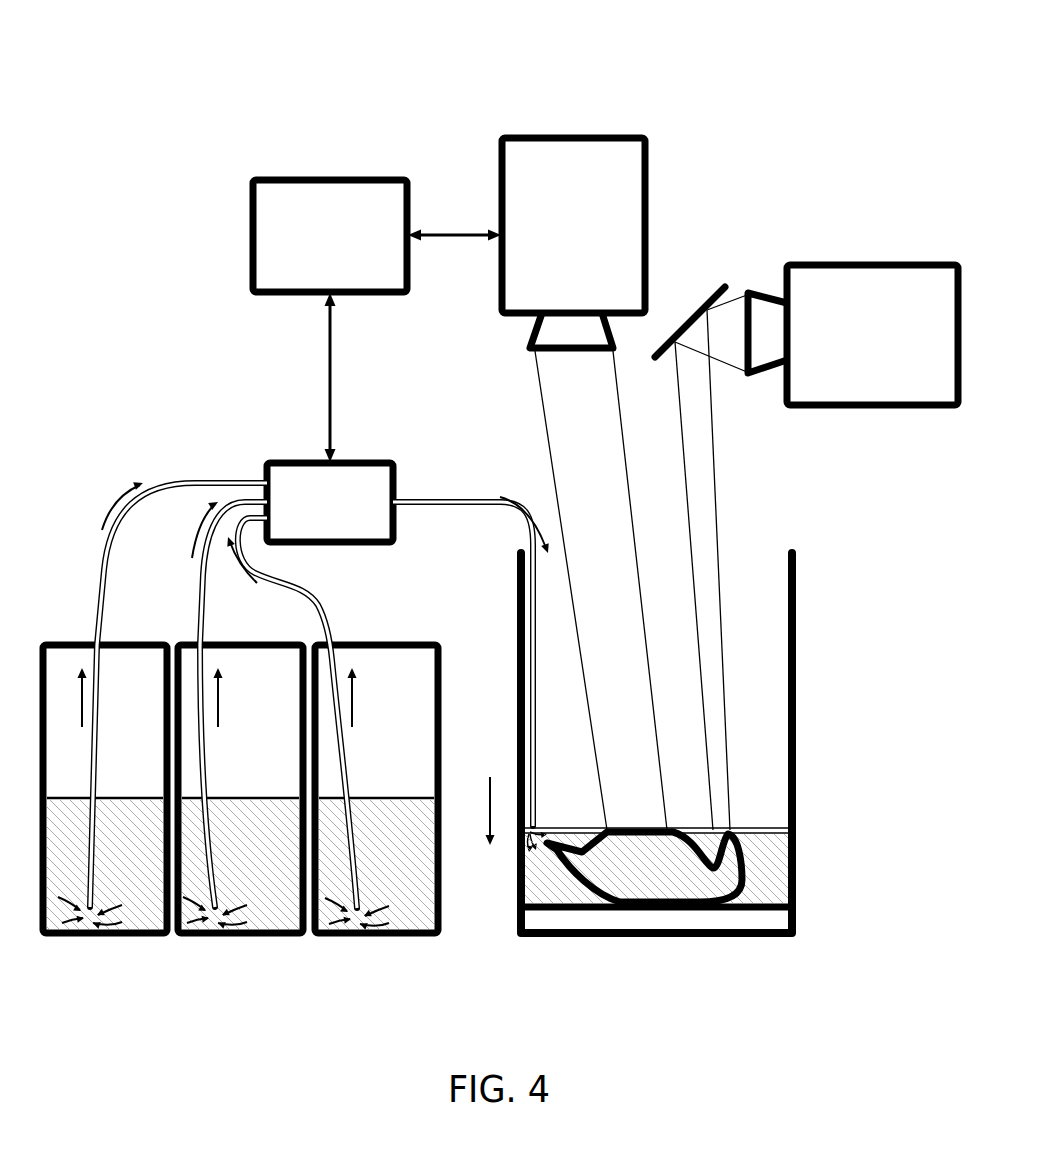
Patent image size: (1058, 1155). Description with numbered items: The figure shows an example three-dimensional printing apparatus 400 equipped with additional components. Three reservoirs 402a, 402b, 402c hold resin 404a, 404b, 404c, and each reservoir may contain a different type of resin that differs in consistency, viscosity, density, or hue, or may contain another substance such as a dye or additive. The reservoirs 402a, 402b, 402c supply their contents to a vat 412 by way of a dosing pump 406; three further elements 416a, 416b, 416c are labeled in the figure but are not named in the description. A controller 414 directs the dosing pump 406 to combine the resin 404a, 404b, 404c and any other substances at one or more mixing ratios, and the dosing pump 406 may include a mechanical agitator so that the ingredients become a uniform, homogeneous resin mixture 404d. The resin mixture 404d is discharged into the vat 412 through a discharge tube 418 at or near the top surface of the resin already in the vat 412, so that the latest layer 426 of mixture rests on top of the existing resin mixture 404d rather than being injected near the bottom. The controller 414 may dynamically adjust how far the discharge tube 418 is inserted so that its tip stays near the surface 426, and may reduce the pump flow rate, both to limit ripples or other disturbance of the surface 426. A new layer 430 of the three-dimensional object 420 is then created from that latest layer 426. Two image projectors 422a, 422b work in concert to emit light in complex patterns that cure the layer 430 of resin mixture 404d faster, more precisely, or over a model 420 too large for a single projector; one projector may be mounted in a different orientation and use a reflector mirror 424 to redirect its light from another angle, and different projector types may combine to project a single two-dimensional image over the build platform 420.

The 3D printing apparatus 400 is at (840, 58).
The reservoir 402a is at (92, 937).
The reservoir 402b is at (226, 937).
The reservoir 402c is at (361, 937).
The resin 404a is at (130, 935).
The resin 404b is at (267, 935).
The resin 404c is at (403, 935).
The resin mixture 404d is at (796, 890).
The dosing pump 406 is at (265, 470).
The vat 412 is at (796, 720).
The controller 414 is at (253, 237).
The first supply tube 416a is at (115, 573).
The second supply tube 416b is at (213, 573).
The third supply tube 416c is at (320, 588).
The discharge tube 418 is at (428, 490).
The 3D object 420 is at (796, 847).
The image projector 422a is at (645, 178).
The image projector 422b is at (877, 407).
The reflector mirror 424 is at (732, 282).
The latest layer of mixture 426 is at (780, 812).
The new layer of the 3D object 430 is at (715, 822).